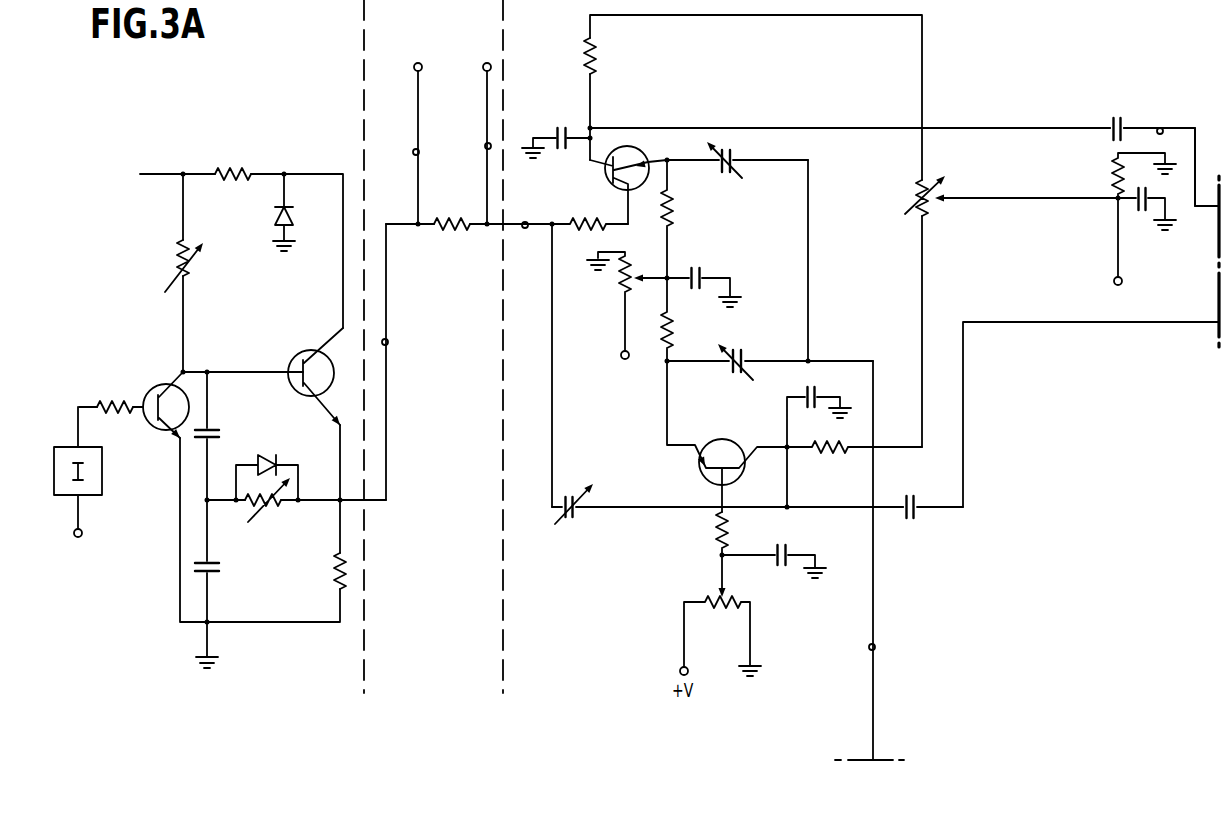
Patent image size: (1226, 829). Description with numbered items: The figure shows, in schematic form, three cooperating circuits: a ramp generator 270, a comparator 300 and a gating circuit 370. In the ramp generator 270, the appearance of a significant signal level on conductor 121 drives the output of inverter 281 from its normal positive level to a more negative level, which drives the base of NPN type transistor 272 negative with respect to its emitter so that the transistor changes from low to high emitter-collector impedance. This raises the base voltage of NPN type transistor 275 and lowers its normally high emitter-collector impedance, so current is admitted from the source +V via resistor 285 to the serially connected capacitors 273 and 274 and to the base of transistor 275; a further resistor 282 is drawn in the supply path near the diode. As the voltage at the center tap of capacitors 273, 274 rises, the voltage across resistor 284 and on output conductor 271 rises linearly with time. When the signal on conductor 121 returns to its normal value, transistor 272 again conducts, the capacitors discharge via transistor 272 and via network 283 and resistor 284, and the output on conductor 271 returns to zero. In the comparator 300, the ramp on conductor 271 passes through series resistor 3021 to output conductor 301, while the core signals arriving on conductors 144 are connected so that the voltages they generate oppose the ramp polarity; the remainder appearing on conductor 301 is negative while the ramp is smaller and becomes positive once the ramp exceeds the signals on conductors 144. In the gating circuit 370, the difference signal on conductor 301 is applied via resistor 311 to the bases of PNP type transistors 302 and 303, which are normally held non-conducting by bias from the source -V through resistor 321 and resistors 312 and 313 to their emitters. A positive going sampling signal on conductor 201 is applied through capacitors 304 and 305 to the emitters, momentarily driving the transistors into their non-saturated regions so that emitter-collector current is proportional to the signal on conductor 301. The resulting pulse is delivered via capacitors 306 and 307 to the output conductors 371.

The ramp generator 270 is at (308, 129).
The resistor 282 is at (238, 172).
The resistor 285 is at (189, 270).
The NPN type transistor 272 is at (153, 386).
The capacitor 273 is at (215, 432).
The NPN type transistor 275 is at (293, 358).
The inverter 281 is at (103, 479).
The conductor 121 is at (80, 513).
The network 283 is at (276, 509).
The capacitor 274 is at (213, 566).
The resistor 284 is at (331, 574).
The output conductor 271 is at (388, 340).
The comparator 300 is at (472, 40).
The conductors 144 is at (487, 146).
The series resistor 3021 is at (452, 232).
The output conductor 301 is at (526, 232).
The resistor 311 is at (583, 217).
The PNP type transistor 302 is at (604, 172).
The capacitor 304 is at (734, 158).
The resistor 312 is at (669, 207).
The resistor 321 is at (621, 283).
The resistor 313 is at (670, 327).
The capacitor 305 is at (741, 350).
The PNP type transistor 303 is at (718, 441).
The capacitor 307 is at (903, 501).
The conductor 201 is at (876, 645).
The capacitor 306 is at (1112, 125).
The output conductors 371 is at (1162, 129).
The gating circuit 370 is at (1165, 82).